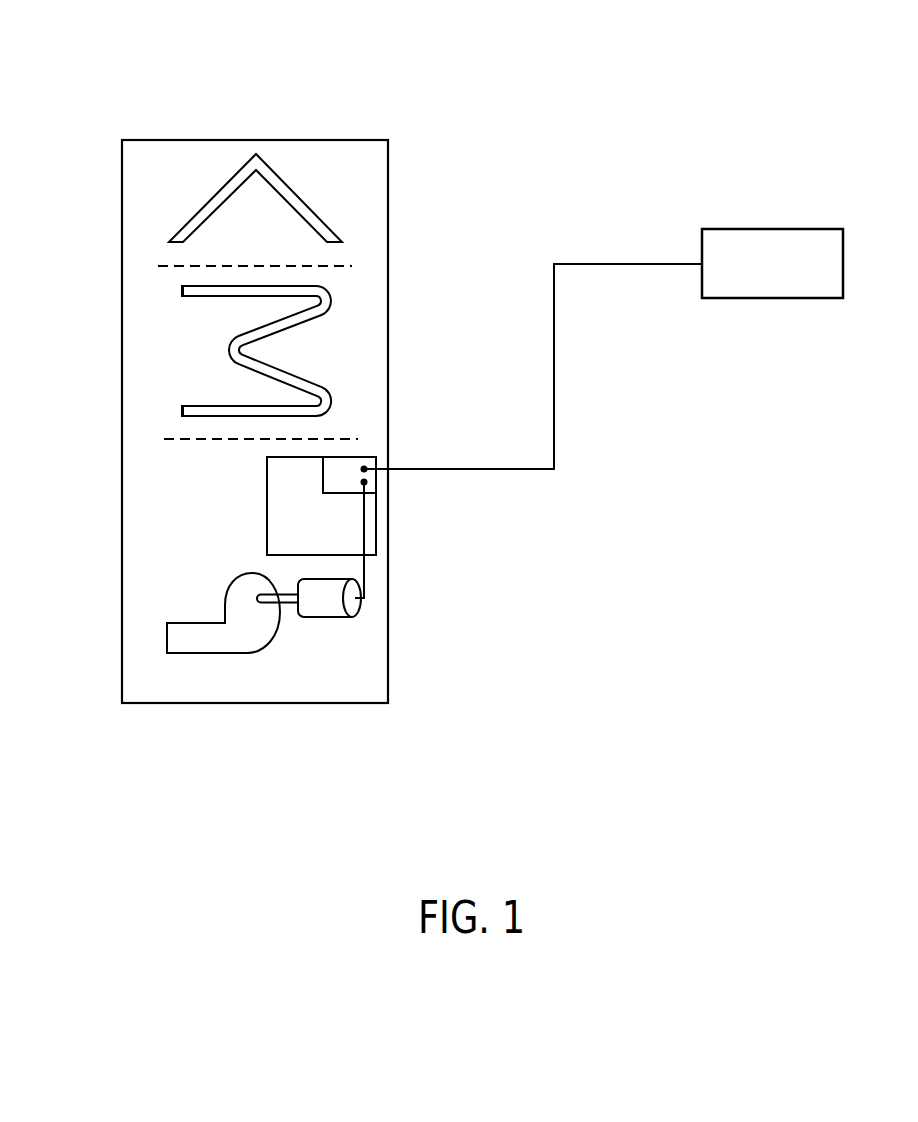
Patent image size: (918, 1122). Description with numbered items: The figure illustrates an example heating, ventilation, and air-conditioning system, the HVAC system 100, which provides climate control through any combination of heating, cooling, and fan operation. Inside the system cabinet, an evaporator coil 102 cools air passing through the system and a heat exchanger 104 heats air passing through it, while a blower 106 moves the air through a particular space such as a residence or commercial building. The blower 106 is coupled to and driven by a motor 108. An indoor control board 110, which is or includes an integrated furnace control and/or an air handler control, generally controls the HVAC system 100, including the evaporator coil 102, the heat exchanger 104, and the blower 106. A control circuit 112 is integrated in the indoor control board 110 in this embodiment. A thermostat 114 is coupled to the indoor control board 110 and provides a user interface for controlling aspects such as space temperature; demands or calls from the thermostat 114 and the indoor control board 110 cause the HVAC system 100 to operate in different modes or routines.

The HVAC system 100 is at (177, 72).
The evaporator coil 102 is at (199, 216).
The heat exchanger 104 is at (192, 290).
The blower 106 is at (183, 641).
The motor 108 is at (322, 607).
The indoor control board 110 is at (293, 502).
The control circuit 112 is at (368, 475).
The thermostat 114 is at (783, 298).